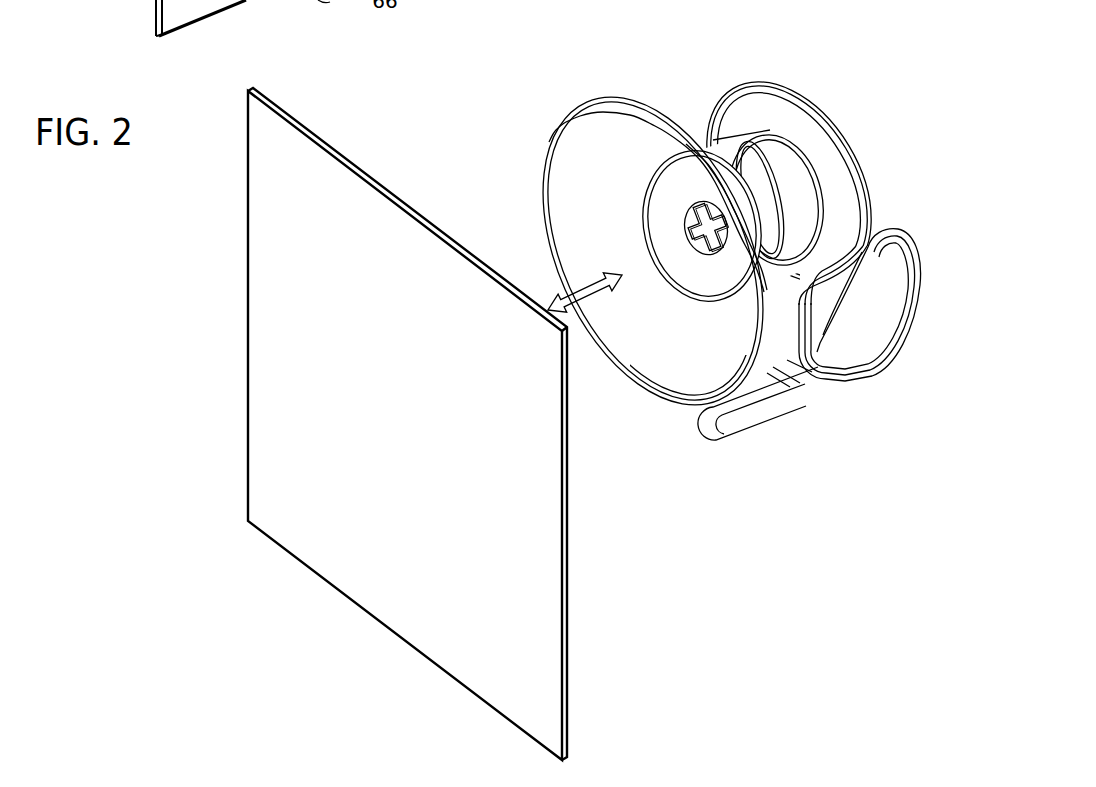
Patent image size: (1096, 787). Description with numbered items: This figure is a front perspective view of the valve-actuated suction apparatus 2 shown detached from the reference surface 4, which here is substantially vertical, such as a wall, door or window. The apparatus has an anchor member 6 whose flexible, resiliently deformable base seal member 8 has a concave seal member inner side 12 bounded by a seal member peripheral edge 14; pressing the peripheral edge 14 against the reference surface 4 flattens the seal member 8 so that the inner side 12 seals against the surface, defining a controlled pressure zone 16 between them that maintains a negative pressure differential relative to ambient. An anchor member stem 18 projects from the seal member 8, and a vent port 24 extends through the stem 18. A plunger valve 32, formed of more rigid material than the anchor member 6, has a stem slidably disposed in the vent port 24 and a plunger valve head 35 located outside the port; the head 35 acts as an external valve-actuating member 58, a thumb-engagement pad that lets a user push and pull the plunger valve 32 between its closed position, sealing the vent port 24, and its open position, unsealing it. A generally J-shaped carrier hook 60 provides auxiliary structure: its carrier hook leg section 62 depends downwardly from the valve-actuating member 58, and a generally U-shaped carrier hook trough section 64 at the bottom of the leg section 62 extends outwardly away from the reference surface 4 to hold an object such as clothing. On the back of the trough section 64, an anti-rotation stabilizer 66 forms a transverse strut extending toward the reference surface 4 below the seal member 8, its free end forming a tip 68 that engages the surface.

The valve-actuated suction apparatus 2 is at (667, 80).
The reference surface 4 is at (238, 323).
The anchor member 6 is at (636, 275).
The base seal member 8 is at (584, 177).
The seal member inner side 12 is at (597, 228).
The seal member peripheral edge 14 is at (578, 111).
The controlled pressure zone 16 is at (583, 298).
The anchor member stem 18 is at (719, 127).
The vent port 24 is at (713, 262).
The plunger valve 32 is at (821, 87).
The plunger valve head 35 is at (843, 134).
The external valve-actuating member 58 is at (857, 178).
The carrier hook 60 is at (879, 288).
The carrier hook leg section 62 is at (780, 310).
The carrier hook trough section 64 is at (855, 337).
The anti-rotation stabilizer 66 is at (730, 420).
The tip 68 is at (700, 428).